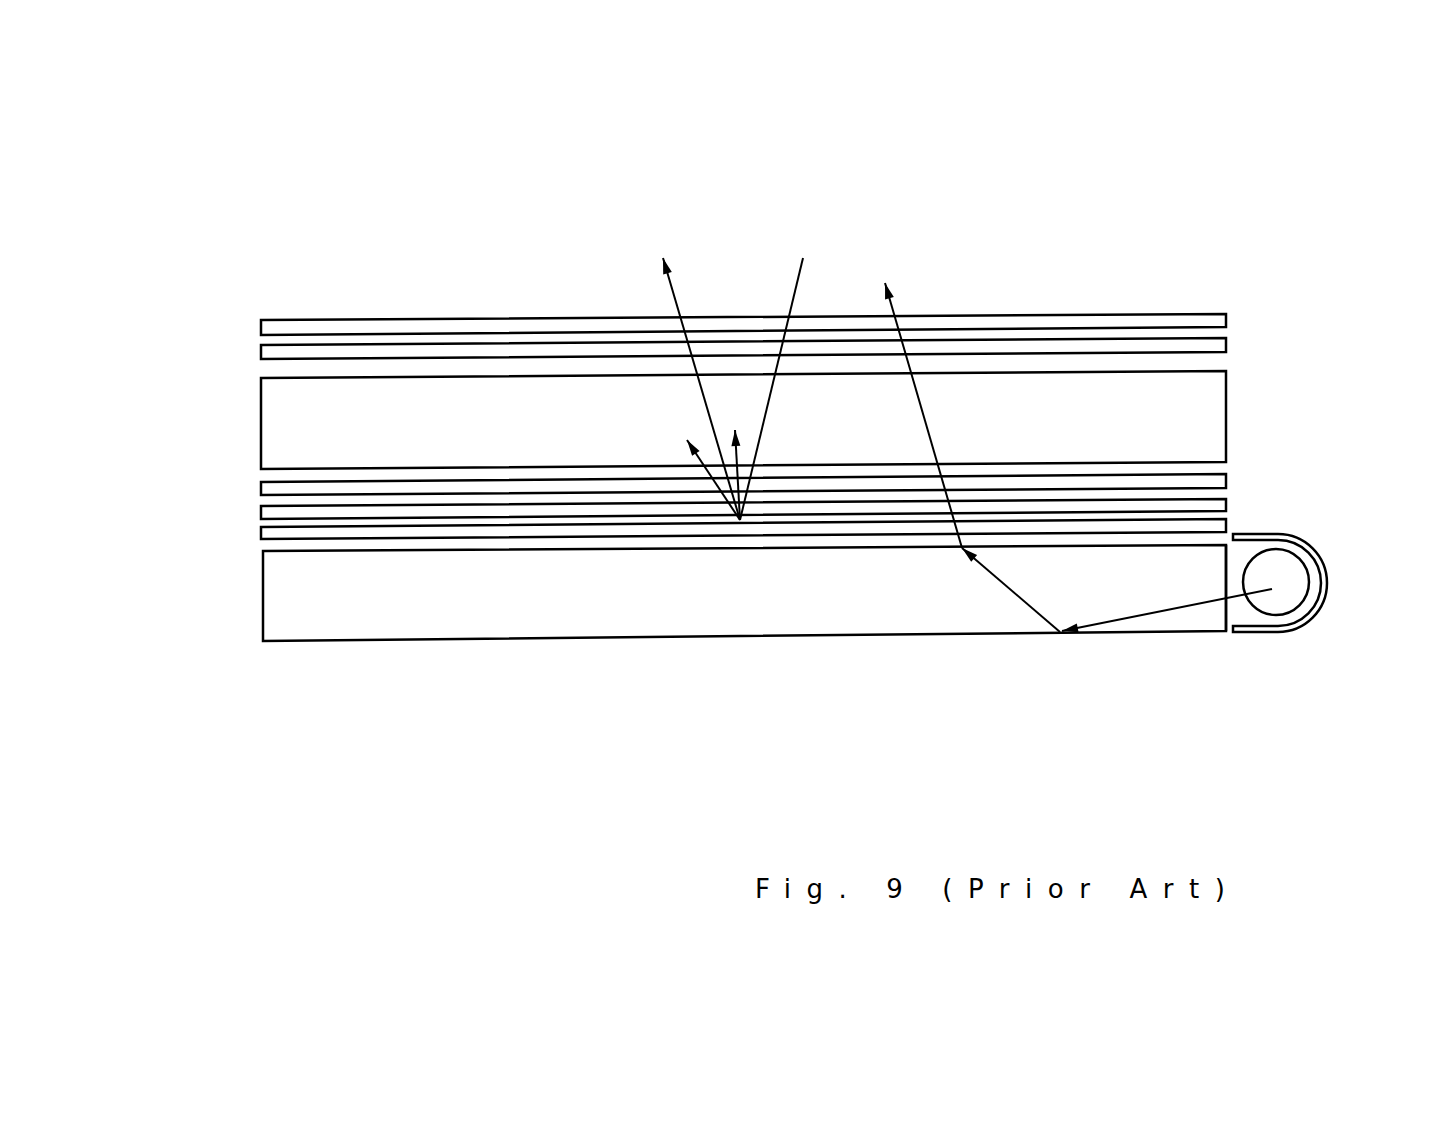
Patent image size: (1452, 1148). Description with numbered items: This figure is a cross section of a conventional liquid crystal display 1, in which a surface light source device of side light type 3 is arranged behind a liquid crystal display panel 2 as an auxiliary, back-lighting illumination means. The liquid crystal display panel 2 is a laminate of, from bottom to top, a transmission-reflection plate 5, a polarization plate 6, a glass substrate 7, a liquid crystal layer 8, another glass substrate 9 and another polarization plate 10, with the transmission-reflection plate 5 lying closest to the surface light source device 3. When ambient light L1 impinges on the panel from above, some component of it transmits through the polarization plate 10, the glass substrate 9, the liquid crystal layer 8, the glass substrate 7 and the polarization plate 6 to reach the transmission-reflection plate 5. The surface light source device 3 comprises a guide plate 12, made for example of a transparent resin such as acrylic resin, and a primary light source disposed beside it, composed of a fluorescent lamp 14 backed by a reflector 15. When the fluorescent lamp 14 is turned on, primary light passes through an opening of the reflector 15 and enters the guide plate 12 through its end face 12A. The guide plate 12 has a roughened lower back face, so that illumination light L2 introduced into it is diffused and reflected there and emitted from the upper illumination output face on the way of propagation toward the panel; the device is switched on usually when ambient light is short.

The liquid crystal display 1 is at (410, 862).
The liquid crystal display panel 2 is at (774, 294).
The surface light source device of side light type 3 is at (772, 600).
The transmission-reflection plate 5 is at (789, 521).
The polarization plate 6 is at (789, 492).
The glass substrate 7 is at (789, 462).
The liquid crystal layer 8 is at (789, 420).
The glass substrate 9 is at (789, 337).
The polarization plate 10 is at (793, 299).
The guide plate 12 is at (744, 632).
The end face 12A is at (1176, 631).
The fluorescent lamp 14 is at (1277, 633).
The reflector 15 is at (1325, 573).
The ambient light L1 is at (733, 370).
The illumination light L2 is at (1078, 430).